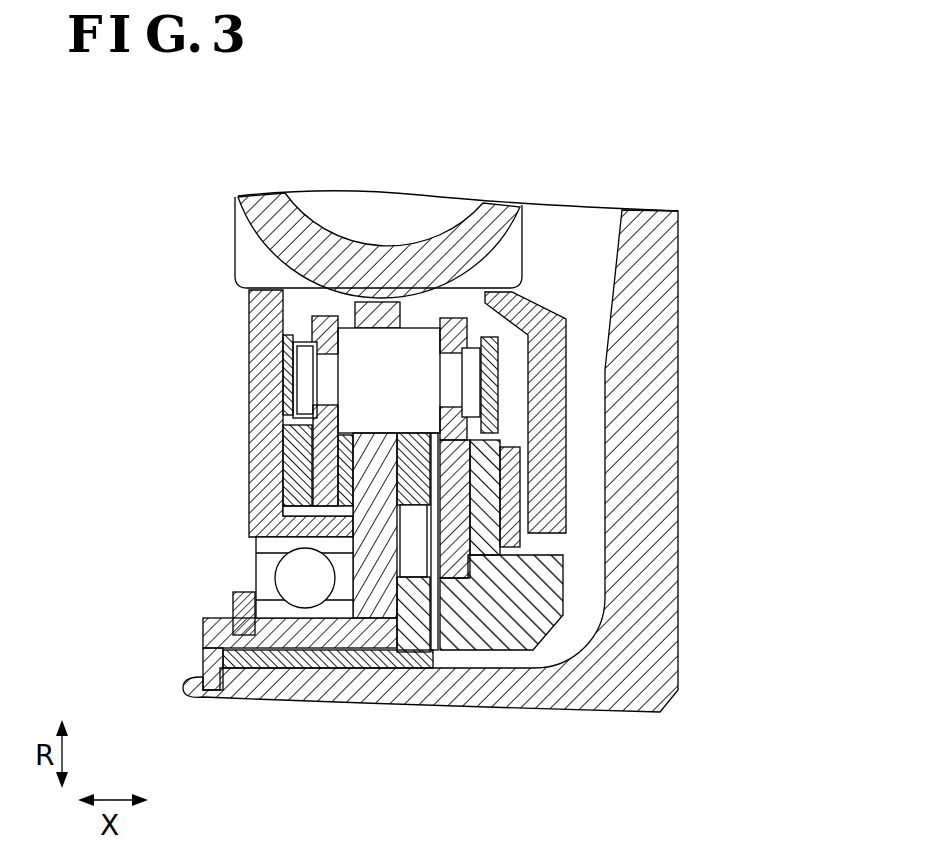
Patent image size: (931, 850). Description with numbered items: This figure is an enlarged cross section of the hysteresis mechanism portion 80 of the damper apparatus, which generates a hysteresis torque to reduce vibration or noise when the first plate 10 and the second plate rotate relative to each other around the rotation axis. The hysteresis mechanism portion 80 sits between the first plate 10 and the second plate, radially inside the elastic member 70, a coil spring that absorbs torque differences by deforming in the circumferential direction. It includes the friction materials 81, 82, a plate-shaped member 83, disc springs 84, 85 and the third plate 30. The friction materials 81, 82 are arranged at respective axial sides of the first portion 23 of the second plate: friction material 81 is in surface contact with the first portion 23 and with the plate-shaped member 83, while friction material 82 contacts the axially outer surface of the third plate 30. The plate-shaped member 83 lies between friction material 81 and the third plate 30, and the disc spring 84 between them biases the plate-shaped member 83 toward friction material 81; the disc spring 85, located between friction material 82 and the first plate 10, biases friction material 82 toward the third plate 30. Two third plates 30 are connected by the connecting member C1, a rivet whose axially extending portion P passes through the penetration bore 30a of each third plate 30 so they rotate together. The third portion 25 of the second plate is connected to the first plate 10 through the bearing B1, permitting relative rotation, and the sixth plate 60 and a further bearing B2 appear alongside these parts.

The first plate 10 is at (262, 310).
The first portion 23 is at (363, 523).
The third portion 25 is at (203, 628).
The third plate 30 is at (288, 412).
The penetration bore 30a is at (322, 361).
The sixth plate 60 is at (660, 622).
The elastic member 70 is at (487, 222).
The hysteresis mechanism portion 80 is at (520, 422).
The friction material 81 is at (305, 450).
The friction material 82 is at (322, 434).
The plate-shaped member 83 is at (427, 543).
The disc spring 84 is at (435, 488).
The disc spring 85 is at (510, 475).
The bearing B1 is at (290, 567).
The bearing B2 is at (317, 660).
The connecting member C1 is at (470, 388).
The axially extending portion P is at (417, 345).